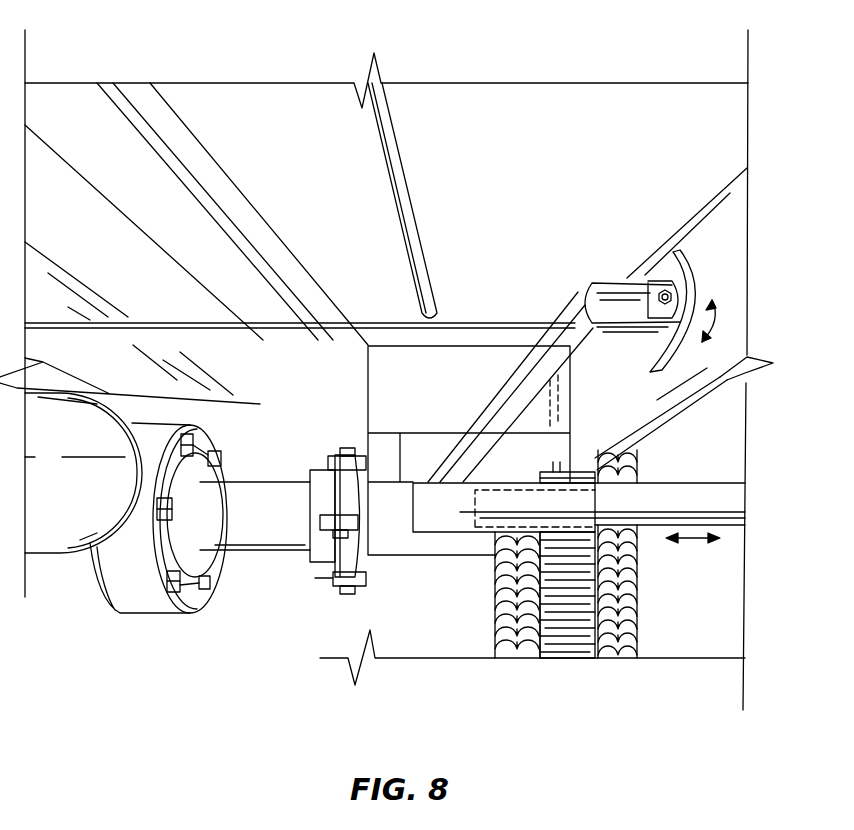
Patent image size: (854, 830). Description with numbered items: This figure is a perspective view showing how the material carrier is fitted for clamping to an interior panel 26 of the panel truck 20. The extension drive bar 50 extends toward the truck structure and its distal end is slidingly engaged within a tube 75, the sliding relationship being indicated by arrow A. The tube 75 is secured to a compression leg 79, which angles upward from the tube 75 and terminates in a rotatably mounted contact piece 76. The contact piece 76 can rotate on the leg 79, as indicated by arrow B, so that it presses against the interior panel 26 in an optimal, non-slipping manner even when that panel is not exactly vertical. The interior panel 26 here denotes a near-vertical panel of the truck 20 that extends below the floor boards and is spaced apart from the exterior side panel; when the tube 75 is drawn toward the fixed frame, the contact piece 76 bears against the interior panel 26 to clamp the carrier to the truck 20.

The panel truck 20 is at (595, 92).
The interior panel 26 is at (658, 402).
The extension drive bar 50 is at (735, 492).
The tube 75 is at (445, 520).
The contact piece 76 is at (693, 252).
The compression leg 79 is at (545, 358).
The arrow A is at (697, 542).
The arrow B is at (714, 318).